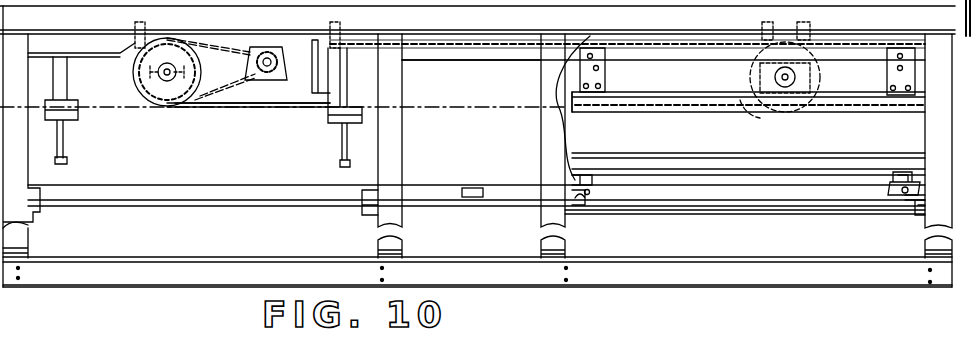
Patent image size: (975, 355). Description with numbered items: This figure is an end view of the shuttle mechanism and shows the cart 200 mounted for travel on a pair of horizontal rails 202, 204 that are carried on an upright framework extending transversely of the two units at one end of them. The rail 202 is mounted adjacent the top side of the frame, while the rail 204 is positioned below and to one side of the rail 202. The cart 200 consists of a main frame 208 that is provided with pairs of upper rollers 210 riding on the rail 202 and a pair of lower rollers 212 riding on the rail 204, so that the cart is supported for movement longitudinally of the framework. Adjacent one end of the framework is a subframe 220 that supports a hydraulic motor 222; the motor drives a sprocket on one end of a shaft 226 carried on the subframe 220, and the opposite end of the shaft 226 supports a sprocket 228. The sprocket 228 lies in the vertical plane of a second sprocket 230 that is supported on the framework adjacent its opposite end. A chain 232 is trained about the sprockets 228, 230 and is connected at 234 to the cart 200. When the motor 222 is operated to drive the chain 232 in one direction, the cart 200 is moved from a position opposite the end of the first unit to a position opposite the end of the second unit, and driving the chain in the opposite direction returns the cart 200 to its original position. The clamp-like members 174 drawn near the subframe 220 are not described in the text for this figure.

The clamp 174 is at (58, 140).
The cart 200 is at (575, 135).
The rail 202 is at (458, 60).
The rail 204 is at (900, 198).
The main frame 208 is at (632, 158).
The upper rollers 210 is at (596, 44).
The lower rollers 212 is at (906, 172).
The subframe 220 is at (322, 53).
The hydraulic motor 222 is at (288, 20).
The shaft 226 is at (170, 70).
The sprocket 228 is at (166, 96).
The second sprocket 230 is at (750, 76).
The chain 232 is at (228, 104).
The connection of chain to cart 234 is at (760, 120).